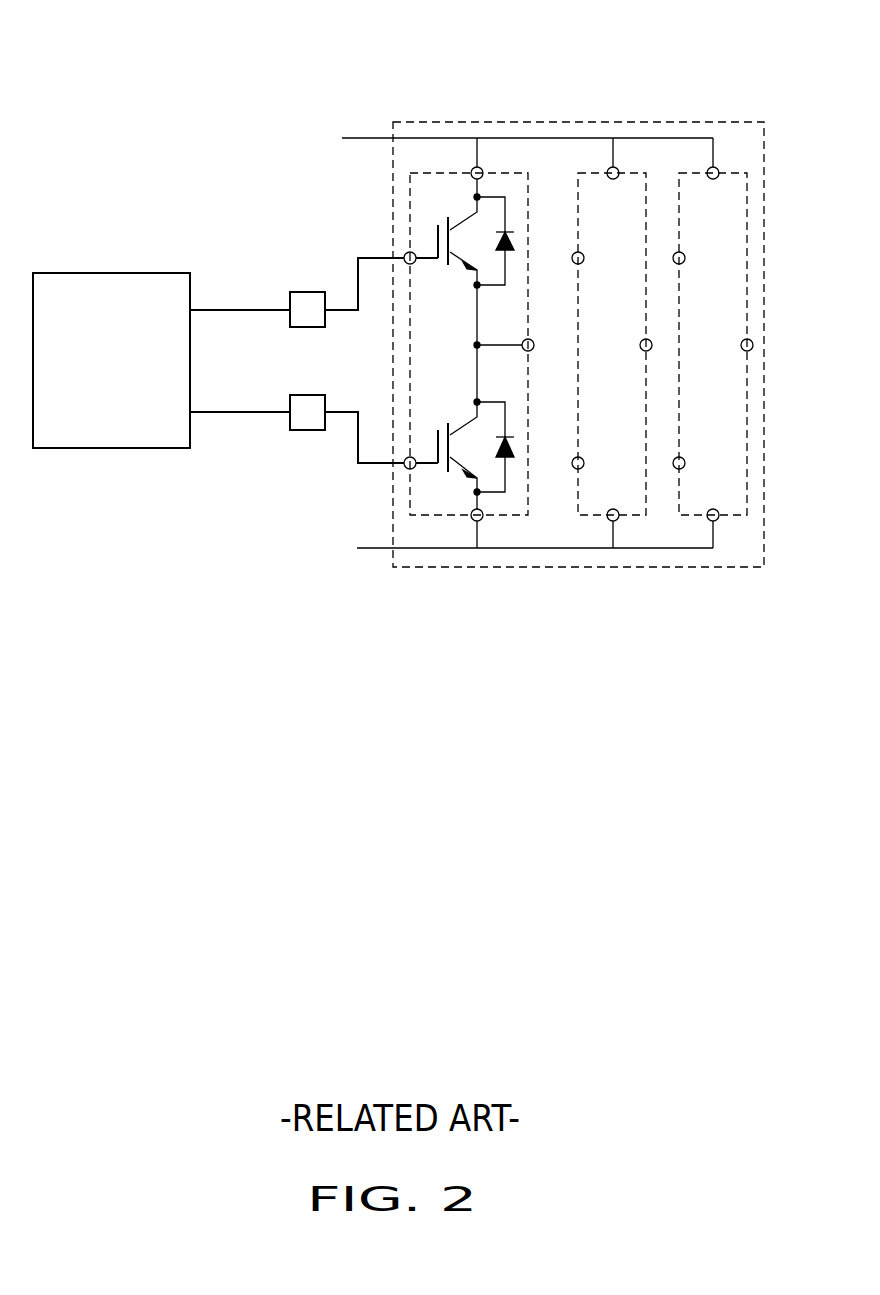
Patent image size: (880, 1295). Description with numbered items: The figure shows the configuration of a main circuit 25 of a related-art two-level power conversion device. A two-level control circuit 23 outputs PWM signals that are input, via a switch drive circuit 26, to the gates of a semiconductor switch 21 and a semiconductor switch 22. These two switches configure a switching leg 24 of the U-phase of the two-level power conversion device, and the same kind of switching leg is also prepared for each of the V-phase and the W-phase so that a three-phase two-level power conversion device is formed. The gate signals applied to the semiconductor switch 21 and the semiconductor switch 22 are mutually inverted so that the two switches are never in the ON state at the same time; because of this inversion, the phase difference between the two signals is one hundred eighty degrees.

The semiconductor switch 21 is at (430, 233).
The semiconductor switch 22 is at (432, 477).
The two-level control circuit 23 is at (105, 265).
The switching leg 24 is at (443, 173).
The main circuit 25 is at (538, 120).
The switch drive circuit 26 is at (305, 290).